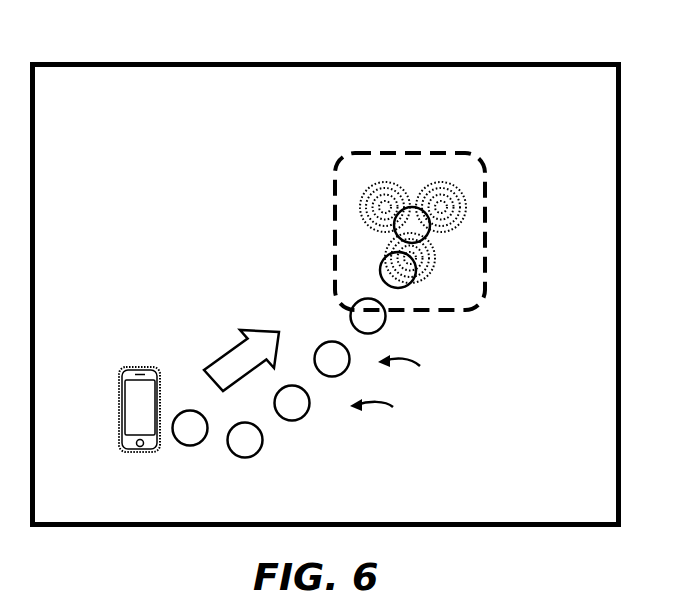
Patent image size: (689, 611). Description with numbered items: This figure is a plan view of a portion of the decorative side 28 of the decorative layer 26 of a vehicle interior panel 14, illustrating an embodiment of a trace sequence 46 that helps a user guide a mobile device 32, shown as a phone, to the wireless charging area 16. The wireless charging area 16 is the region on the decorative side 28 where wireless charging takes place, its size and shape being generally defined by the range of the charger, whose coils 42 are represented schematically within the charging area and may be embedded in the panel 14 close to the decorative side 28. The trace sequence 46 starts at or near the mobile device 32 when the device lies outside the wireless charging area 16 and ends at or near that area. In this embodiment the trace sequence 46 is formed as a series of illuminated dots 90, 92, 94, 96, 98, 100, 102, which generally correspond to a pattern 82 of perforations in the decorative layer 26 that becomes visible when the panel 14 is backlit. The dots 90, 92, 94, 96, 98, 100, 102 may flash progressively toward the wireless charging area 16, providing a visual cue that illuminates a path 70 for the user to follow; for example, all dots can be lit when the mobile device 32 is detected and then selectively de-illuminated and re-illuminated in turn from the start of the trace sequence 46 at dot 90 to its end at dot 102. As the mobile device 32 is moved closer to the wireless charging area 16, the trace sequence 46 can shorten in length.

The vehicle interior panel 14 is at (554, 54).
The decorative layer 26 is at (327, 77).
The decorative side 28 is at (386, 77).
The wireless charging area 16 is at (489, 279).
The coils 42 is at (453, 196).
The dot 102 is at (403, 210).
The dot 100 is at (382, 272).
The dot 98 is at (353, 320).
The dot 96 is at (320, 359).
The dot 94 is at (297, 413).
The dot 92 is at (240, 448).
The dot 90 is at (186, 436).
The path 70 is at (232, 358).
The trace sequence 46 is at (416, 368).
The pattern 82 is at (389, 412).
The mobile device 32 is at (127, 408).